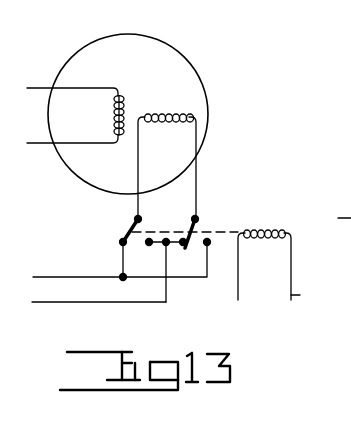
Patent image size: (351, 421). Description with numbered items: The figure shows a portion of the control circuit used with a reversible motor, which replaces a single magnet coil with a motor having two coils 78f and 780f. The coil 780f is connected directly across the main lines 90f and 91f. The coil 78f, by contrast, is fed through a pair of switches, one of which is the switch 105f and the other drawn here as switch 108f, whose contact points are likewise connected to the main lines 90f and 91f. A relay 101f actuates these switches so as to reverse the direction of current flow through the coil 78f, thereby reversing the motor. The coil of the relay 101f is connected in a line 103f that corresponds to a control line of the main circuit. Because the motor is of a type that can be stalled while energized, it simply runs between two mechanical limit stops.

The main line 91f is at (36, 87).
The main line 90f is at (35, 145).
The coil 780f is at (125, 109).
The coil 78f is at (165, 121).
The switch contact 108f is at (126, 233).
The switch 105f is at (192, 238).
The relay 101f is at (270, 240).
The line 103f is at (300, 295).